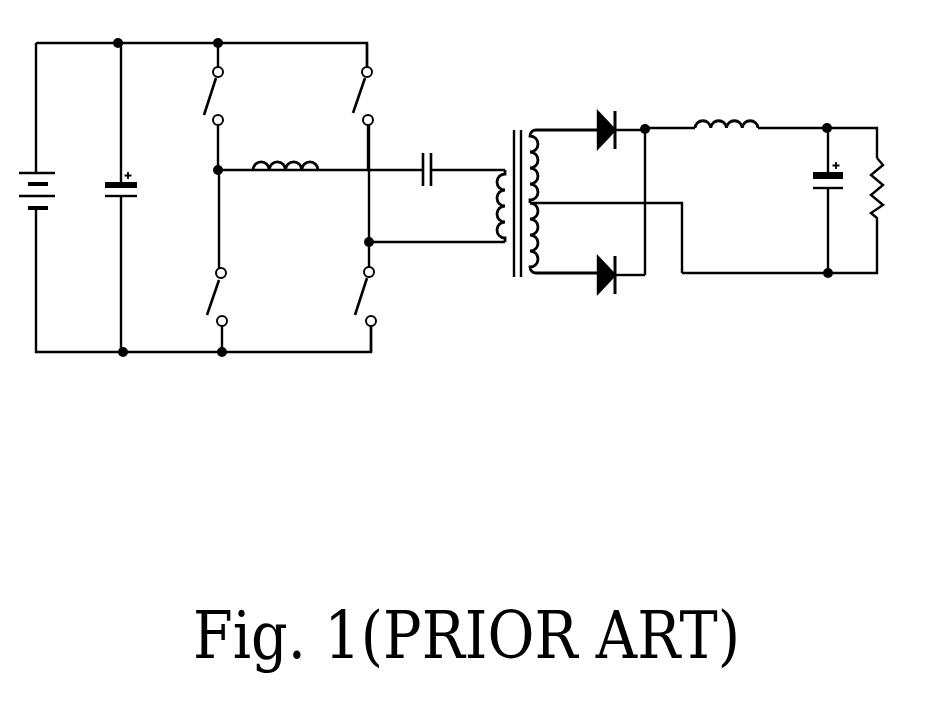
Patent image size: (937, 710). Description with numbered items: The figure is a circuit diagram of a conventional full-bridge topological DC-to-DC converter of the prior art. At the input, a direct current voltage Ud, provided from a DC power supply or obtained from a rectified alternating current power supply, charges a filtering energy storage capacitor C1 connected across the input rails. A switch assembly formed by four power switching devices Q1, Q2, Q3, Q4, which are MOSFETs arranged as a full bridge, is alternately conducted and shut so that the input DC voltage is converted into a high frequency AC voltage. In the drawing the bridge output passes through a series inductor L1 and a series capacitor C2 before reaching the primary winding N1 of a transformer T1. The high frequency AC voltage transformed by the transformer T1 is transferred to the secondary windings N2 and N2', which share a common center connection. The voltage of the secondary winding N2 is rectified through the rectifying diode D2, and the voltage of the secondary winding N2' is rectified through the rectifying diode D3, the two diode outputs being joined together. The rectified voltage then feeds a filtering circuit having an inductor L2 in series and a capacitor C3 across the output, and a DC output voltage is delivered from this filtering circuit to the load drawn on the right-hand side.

The direct current voltage Ud is at (49, 178).
The filtering energy storage capacitor C1 is at (133, 197).
The power switching device Q1 is at (197, 106).
The power switching device Q2 is at (201, 261).
The power switching device Q3 is at (346, 106).
The power switching device Q4 is at (349, 297).
The resonant inductor L1 is at (285, 153).
The resonant capacitor C2 is at (428, 158).
The transformer T1 is at (526, 190).
The transformer primary winding N1 is at (485, 206).
The secondary winding N2 is at (564, 166).
The secondary winding N2' is at (606, 238).
The rectifying diode D2 is at (618, 181).
The rectifying diode D3 is at (621, 264).
The inductor L2 is at (761, 128).
The capacitor C3 is at (810, 200).